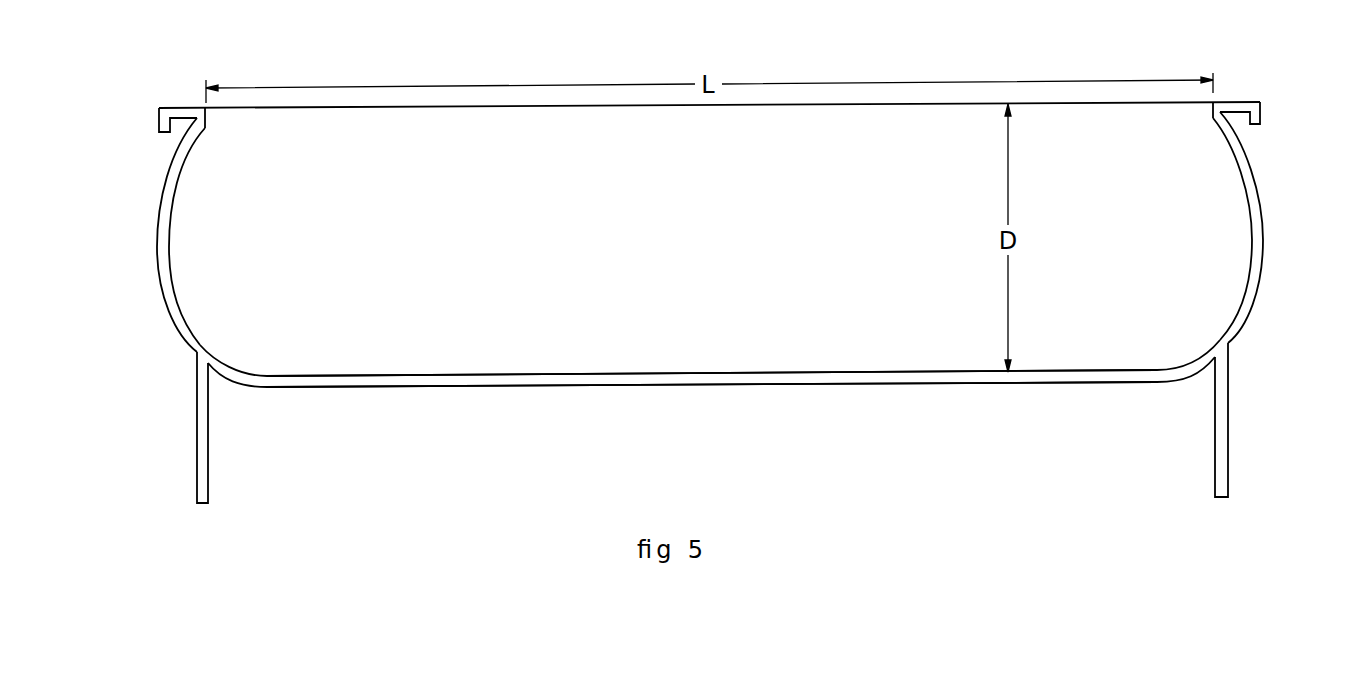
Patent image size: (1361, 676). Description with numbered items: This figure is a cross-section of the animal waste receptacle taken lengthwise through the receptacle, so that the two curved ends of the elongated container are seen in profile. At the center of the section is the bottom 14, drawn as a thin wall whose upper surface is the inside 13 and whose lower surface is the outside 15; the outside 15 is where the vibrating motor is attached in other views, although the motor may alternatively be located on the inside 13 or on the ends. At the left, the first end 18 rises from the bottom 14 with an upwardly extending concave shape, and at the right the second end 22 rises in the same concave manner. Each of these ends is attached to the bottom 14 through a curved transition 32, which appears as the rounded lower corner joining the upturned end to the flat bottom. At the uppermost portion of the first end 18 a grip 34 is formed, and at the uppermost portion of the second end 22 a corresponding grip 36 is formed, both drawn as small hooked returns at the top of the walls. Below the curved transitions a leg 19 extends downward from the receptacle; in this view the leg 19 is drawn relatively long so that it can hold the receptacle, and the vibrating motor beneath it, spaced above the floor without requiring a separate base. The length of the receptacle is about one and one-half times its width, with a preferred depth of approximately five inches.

The inside 13 is at (717, 373).
The bottom 14 is at (588, 382).
The outside 15 is at (750, 385).
The first end 18 is at (171, 217).
The leg 19 is at (1218, 397).
The second end 22 is at (1249, 220).
The curved transition 32 is at (221, 360).
The grip 34 is at (158, 118).
The grip 36 is at (1262, 108).